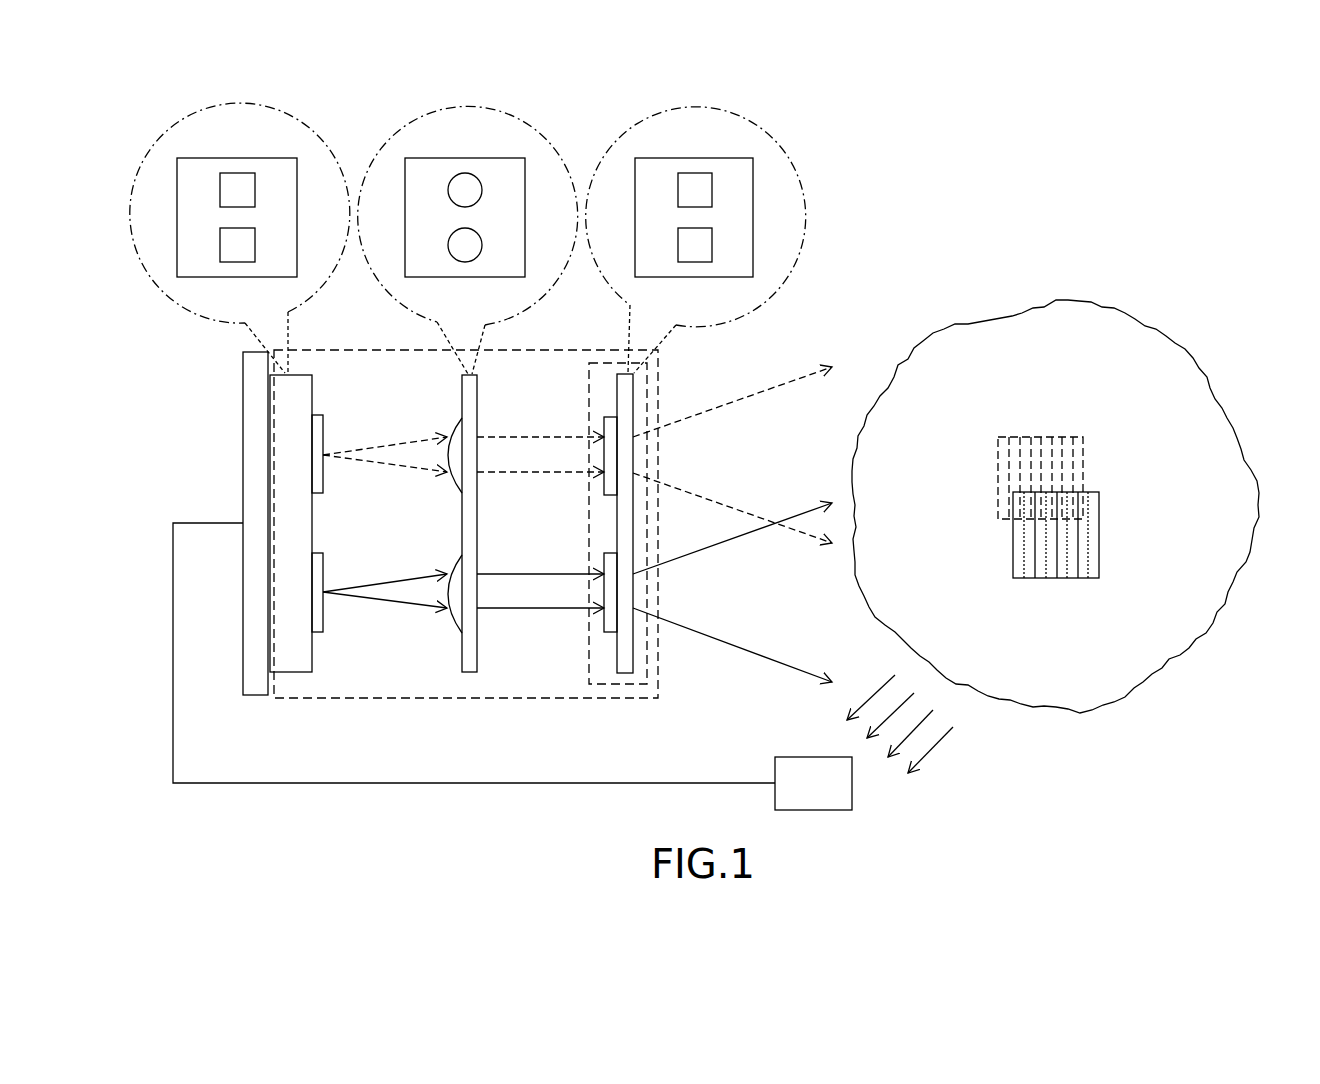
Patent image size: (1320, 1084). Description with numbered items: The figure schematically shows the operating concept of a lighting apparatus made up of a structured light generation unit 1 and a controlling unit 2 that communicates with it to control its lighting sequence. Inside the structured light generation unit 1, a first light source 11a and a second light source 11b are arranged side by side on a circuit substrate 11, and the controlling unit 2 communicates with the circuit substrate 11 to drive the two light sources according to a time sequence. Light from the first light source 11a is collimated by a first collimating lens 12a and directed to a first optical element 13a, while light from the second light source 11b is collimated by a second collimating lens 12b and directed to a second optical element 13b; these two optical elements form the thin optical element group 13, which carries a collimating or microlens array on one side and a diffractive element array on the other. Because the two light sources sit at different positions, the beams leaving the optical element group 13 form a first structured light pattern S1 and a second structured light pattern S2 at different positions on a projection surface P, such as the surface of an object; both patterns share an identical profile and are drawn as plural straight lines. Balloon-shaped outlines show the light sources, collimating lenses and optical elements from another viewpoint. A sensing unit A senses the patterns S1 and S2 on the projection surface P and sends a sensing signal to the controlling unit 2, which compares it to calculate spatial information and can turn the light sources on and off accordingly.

The structured light generation unit 1 is at (333, 698).
The controlling unit 2 is at (257, 447).
The circuit substrate 11 is at (297, 543).
The first light source 11a is at (235, 175).
The second light source 11b is at (227, 255).
The first collimating lens 12a is at (462, 175).
The second collimating lens 12b is at (451, 253).
The optical element group 13 is at (648, 402).
The first optical element 13a is at (687, 178).
The second optical element 13b is at (683, 255).
The sensing unit A is at (813, 767).
The projection surface P is at (1147, 350).
The first structured light pattern S1 is at (1053, 436).
The second structured light pattern S2 is at (1100, 517).